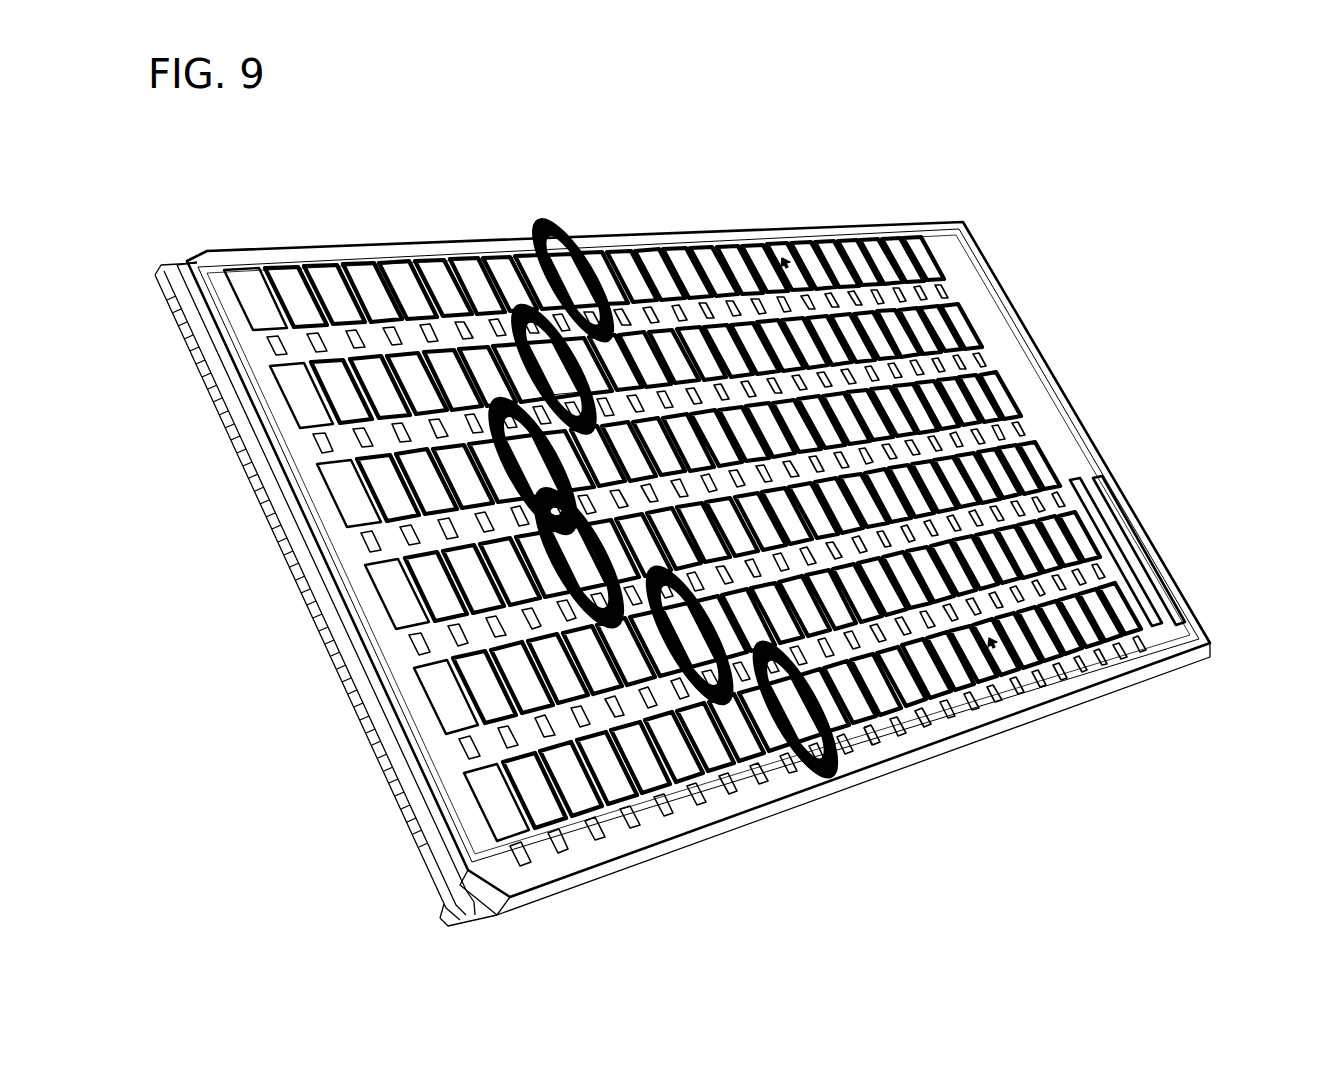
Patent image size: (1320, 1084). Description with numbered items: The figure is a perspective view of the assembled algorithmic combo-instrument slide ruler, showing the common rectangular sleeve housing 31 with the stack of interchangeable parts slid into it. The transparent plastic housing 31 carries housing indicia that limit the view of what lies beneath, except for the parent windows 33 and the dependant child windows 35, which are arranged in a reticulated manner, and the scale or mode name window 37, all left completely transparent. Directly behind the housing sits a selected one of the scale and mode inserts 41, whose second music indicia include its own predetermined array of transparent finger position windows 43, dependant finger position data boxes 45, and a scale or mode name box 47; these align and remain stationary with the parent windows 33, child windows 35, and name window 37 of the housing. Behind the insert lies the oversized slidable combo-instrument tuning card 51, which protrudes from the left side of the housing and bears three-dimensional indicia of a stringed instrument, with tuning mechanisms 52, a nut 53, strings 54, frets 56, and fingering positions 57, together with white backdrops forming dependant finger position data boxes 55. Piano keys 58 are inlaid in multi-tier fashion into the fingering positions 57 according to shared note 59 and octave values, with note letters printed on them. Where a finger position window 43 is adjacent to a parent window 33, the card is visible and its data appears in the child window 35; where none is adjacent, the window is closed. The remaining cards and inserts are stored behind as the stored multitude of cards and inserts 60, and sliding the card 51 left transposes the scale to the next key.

The rectangular sleeve housing 31 is at (626, 262).
The parent windows 33 is at (548, 355).
The dependant child windows 35 is at (748, 783).
The scale or mode name window 37 is at (1165, 640).
The scale and mode inserts 41 is at (1037, 385).
The transparent finger position windows 43 is at (553, 367).
The dependant finger position data boxes 45 is at (737, 566).
The scale or mode name box 47 is at (1180, 606).
The slidable combo-instrument tuning card 51 is at (1050, 415).
The tuning mechanisms 52 is at (664, 496).
The nut 53 is at (631, 276).
The strings 54 is at (828, 248).
The dependant finger position data boxes 55 is at (872, 735).
The frets 56 is at (813, 265).
The fingering positions 57 is at (800, 250).
The piano keys 58 is at (897, 475).
The shared note 59 is at (687, 273).
The stored multitude of cards and inserts 60 is at (440, 925).